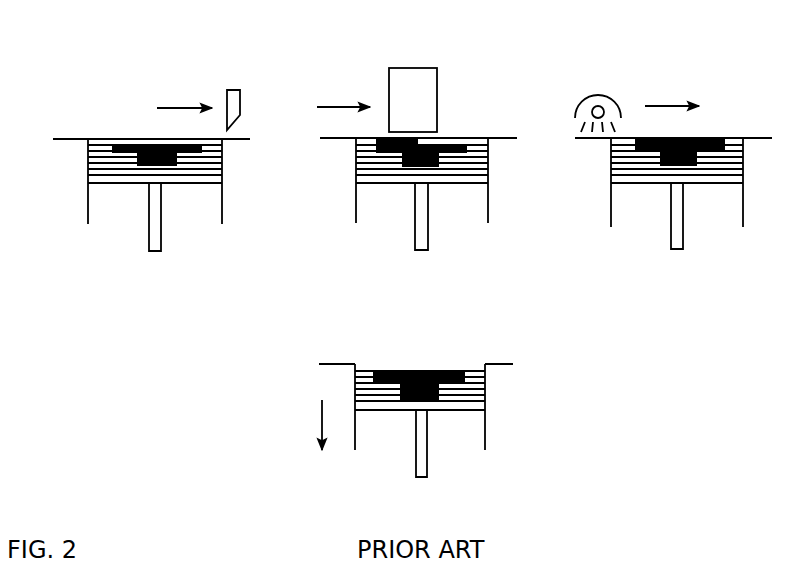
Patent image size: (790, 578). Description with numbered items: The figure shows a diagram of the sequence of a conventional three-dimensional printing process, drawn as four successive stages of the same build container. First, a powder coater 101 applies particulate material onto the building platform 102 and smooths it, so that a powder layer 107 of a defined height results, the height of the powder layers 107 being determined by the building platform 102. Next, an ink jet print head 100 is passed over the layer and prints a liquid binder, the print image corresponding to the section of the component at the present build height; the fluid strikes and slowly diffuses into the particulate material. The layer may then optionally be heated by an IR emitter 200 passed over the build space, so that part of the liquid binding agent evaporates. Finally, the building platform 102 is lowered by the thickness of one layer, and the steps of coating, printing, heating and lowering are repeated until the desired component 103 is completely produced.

The ink jet print head 100 is at (416, 89).
The powder coater 101 is at (231, 104).
The building platform 102 is at (204, 180).
The component 103 is at (661, 170).
The powder layers 107 is at (104, 176).
The IR emitter 200 is at (593, 108).